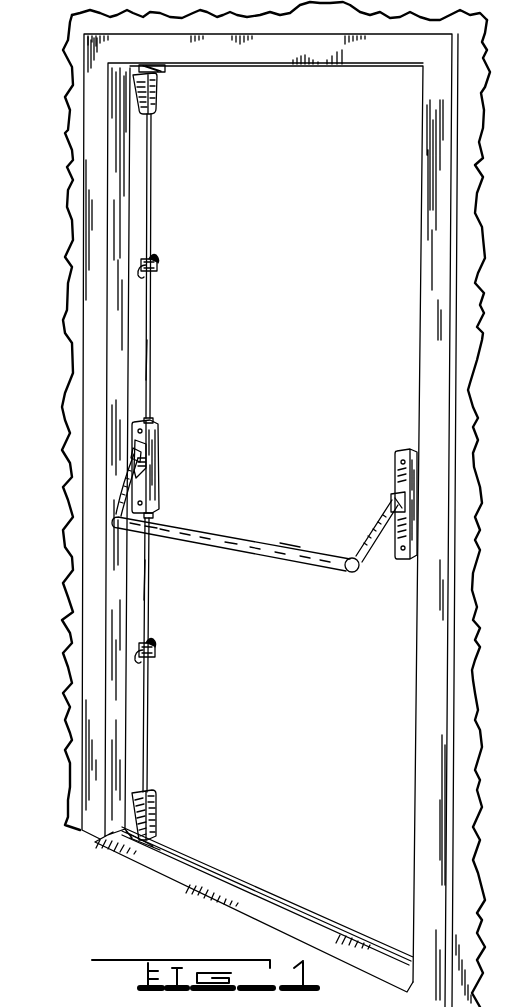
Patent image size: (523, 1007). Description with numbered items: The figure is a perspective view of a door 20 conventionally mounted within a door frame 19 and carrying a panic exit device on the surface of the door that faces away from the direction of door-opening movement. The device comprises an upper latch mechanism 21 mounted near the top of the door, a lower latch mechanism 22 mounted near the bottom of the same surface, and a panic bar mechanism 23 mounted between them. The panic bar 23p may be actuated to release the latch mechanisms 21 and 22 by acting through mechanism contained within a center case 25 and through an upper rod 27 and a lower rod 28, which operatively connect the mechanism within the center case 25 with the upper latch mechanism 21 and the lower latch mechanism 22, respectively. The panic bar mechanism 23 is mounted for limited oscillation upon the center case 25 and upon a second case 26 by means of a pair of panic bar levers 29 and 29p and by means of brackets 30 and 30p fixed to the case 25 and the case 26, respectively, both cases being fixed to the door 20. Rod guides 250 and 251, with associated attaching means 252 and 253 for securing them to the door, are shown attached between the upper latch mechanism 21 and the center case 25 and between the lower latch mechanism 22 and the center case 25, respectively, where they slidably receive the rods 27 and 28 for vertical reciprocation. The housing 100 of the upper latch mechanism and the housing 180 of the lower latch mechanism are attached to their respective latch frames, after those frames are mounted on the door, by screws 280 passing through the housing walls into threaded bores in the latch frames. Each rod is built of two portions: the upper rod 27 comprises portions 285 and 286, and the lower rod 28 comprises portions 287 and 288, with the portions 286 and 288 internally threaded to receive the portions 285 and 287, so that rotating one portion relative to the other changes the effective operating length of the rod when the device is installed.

The door frame 19 is at (256, 35).
The door 20 is at (337, 88).
The upper latch mechanism 21 is at (159, 100).
The housing 100 is at (157, 88).
The screws 280 is at (155, 78).
The attaching means 252 is at (157, 261).
The rod guide 250 is at (153, 280).
The upper rod 27 is at (152, 318).
The rod portion 285 is at (152, 360).
The rod portion 286 is at (151, 418).
The center case 25 is at (158, 457).
The bracket 30 is at (131, 454).
The rod portion 288 is at (155, 516).
The panic bar lever 29 is at (118, 505).
The panic bar mechanism 23 is at (246, 565).
The panic bar 23p is at (291, 544).
The lower rod 28 is at (149, 614).
The rod portion 287 is at (149, 578).
The attaching means 253 is at (154, 646).
The rod guide 251 is at (151, 667).
The lower latch mechanism 22 is at (153, 814).
The housing 180 is at (157, 812).
The case 26 is at (395, 476).
The bracket 30p is at (392, 497).
The panic bar lever 29p is at (359, 573).